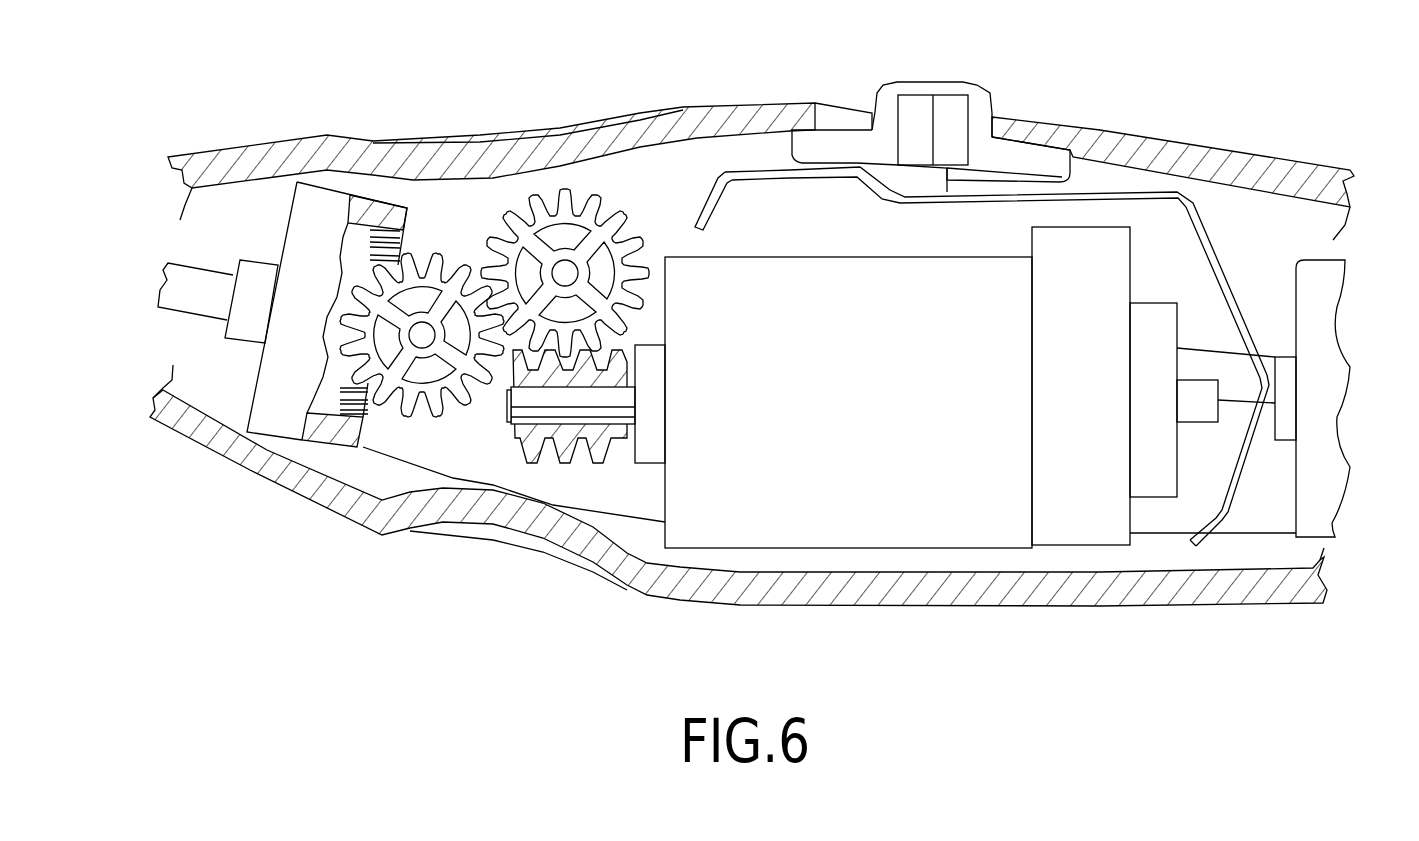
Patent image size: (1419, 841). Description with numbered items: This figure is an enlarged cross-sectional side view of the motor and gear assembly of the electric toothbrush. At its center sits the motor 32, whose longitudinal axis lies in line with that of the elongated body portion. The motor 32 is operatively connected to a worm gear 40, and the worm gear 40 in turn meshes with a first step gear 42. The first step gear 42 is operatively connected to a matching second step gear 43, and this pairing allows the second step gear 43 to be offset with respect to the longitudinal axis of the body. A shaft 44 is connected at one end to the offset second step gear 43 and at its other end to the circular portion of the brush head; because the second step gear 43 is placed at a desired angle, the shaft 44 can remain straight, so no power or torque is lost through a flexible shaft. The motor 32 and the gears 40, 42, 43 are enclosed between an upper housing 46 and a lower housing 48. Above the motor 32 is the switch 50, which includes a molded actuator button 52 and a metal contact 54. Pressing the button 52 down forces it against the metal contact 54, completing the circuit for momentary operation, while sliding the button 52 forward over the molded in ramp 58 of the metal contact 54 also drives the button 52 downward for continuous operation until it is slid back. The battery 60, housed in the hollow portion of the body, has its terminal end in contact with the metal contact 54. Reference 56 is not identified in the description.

The motor 32 is at (940, 522).
The worm gear 40 is at (562, 462).
The first step gear 42 is at (597, 200).
The second step gear 43 is at (440, 257).
The shaft 44 is at (178, 300).
The upper housing 46 is at (805, 593).
The lower housing 48 is at (693, 107).
The switch 50 is at (932, 108).
The molded actuator button 52 is at (920, 82).
The metal contact 54 is at (982, 314).
The housing opening 56 is at (818, 120).
The molded in ramp 58 is at (880, 187).
The battery 60 is at (1313, 303).